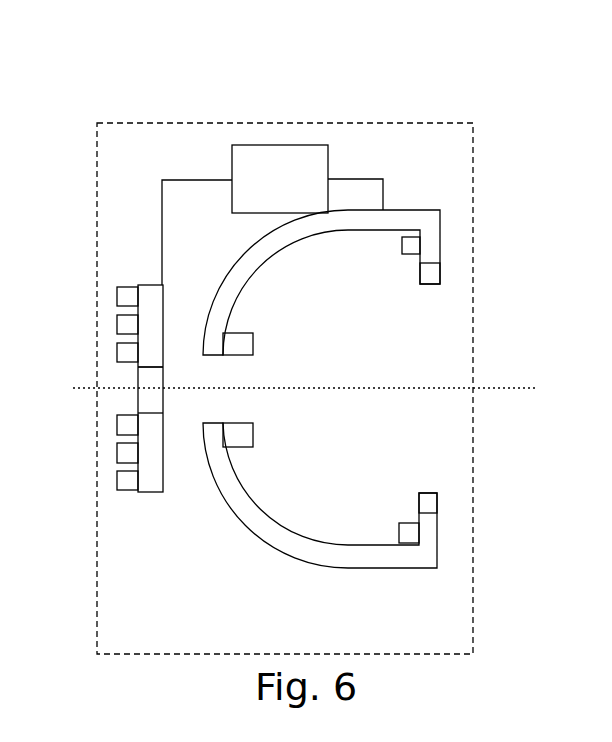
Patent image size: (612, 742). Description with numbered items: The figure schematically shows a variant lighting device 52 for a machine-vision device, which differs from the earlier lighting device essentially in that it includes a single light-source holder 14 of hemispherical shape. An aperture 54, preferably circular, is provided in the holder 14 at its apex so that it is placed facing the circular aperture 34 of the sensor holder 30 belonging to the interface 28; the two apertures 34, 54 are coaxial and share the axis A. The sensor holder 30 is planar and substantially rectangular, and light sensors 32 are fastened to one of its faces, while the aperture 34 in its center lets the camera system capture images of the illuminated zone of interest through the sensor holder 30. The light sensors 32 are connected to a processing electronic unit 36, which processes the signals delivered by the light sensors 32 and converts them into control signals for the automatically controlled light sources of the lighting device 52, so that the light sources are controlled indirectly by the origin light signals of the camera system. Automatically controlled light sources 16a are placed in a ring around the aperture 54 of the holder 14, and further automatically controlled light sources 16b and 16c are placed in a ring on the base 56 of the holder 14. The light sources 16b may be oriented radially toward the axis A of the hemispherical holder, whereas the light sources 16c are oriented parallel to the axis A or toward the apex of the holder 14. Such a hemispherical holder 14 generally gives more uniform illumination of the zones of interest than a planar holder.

The variant lighting device 52 is at (447, 123).
The axis A is at (495, 388).
The processing electronic unit 36 is at (280, 179).
The interface 28 is at (151, 284).
The light sensors 32 is at (128, 322).
The circular aperture 34 is at (131, 373).
The sensor holder 30 is at (148, 492).
The automatically controlled light sources 16a is at (253, 347).
The automatically controlled light sources 16b is at (420, 278).
The automatically controlled light sources 16c is at (402, 247).
The light-source holder 14 is at (300, 538).
The aperture 54 is at (233, 411).
The base 56 is at (432, 543).